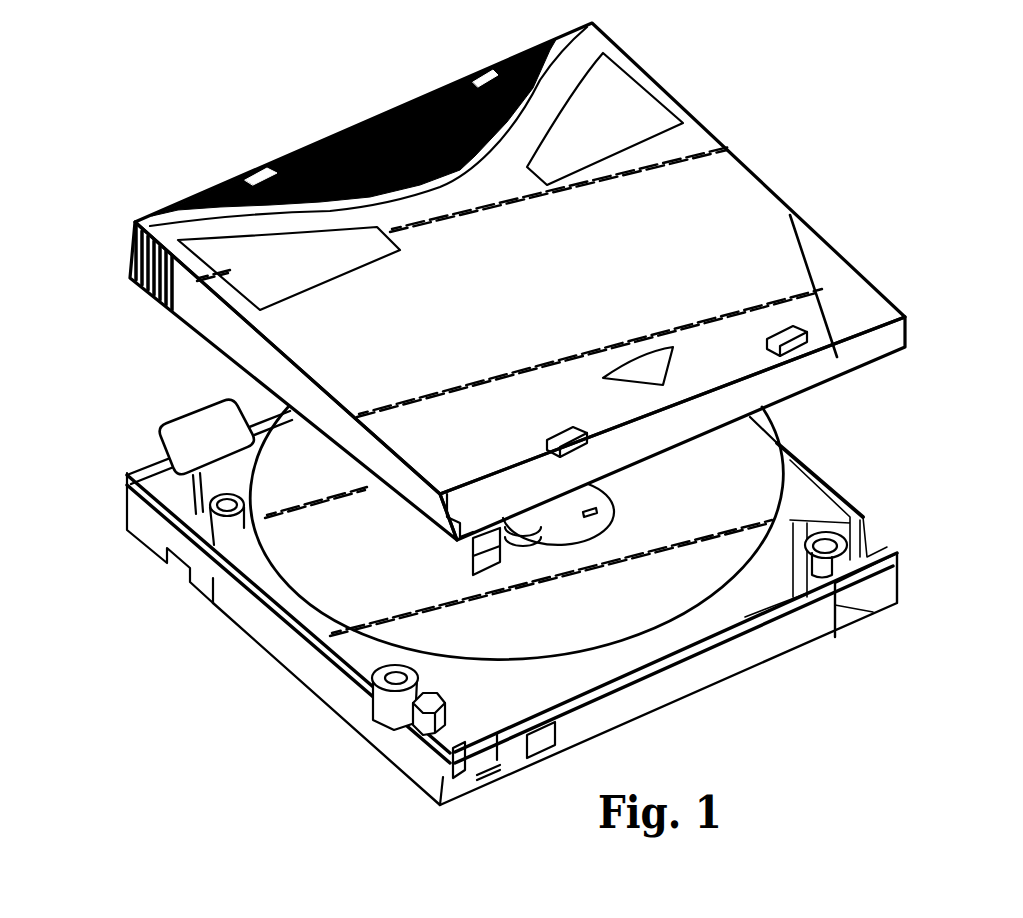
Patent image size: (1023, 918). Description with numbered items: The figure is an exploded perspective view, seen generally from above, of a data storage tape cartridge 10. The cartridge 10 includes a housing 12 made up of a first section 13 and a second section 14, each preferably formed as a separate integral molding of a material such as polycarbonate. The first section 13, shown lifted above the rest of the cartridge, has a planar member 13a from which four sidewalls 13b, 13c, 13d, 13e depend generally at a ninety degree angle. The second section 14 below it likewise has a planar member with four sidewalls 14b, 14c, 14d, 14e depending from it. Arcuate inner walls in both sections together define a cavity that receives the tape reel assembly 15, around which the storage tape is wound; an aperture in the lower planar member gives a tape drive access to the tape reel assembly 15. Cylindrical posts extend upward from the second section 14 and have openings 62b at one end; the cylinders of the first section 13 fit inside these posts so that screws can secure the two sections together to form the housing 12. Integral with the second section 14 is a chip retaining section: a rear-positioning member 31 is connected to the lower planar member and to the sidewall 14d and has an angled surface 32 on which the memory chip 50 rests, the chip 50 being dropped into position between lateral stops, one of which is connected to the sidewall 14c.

The data storage tape cartridge 10 is at (966, 289).
The housing 12 is at (108, 302).
The first section 13 is at (768, 272).
The planar member 13a is at (730, 193).
The sidewall 13b is at (817, 367).
The sidewall 13c is at (215, 328).
The sidewall 13d is at (288, 153).
The sidewall 13e is at (650, 77).
The second section 14 is at (827, 483).
The sidewall 14b is at (727, 657).
The sidewall 14c is at (297, 657).
The sidewall 14d is at (137, 470).
The sidewall 14e is at (847, 500).
The tape reel assembly 15 is at (748, 450).
The rear-positioning member 31 is at (145, 543).
The angled surface 32 is at (135, 505).
The memory chip 50 is at (207, 410).
The opening 62b is at (853, 533).